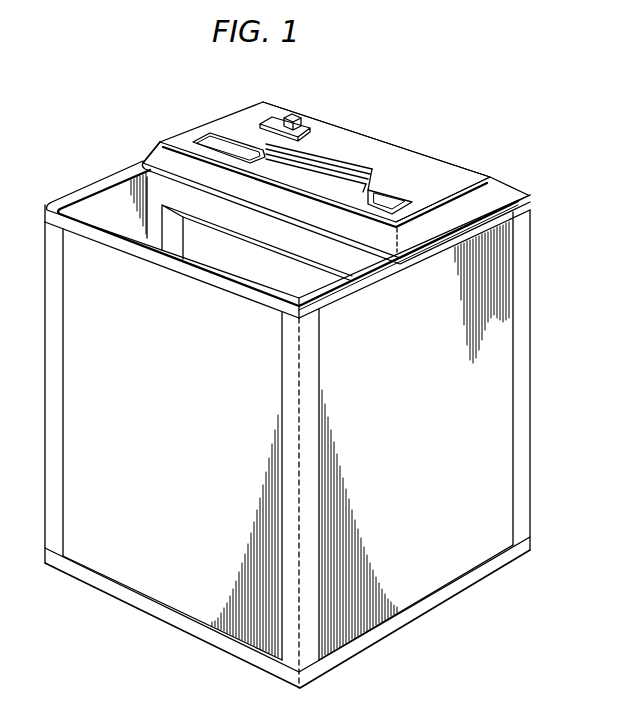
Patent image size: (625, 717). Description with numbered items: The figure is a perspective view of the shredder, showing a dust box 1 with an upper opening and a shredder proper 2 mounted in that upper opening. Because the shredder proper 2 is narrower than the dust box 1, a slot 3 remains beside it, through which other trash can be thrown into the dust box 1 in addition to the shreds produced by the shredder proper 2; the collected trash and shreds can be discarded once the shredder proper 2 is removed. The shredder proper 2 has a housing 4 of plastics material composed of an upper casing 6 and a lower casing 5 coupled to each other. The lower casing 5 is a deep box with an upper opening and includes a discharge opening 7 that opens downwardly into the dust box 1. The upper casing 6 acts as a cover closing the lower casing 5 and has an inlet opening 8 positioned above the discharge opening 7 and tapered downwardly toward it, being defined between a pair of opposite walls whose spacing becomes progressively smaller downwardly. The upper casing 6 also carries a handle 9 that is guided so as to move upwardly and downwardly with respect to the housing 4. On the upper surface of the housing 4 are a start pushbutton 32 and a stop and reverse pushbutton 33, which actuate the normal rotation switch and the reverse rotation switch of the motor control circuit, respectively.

The dust box 1 is at (497, 493).
The shredder proper 2 is at (325, 165).
The slot 3 is at (97, 207).
The housing 4 is at (155, 160).
The lower casing 5 is at (365, 265).
The upper casing 6 is at (415, 160).
The discharge opening 7 is at (248, 262).
The inlet opening 8 is at (222, 142).
The handle 9 is at (333, 168).
The start pushbutton 32 is at (272, 122).
The stop and reverse pushbutton 33 is at (293, 119).